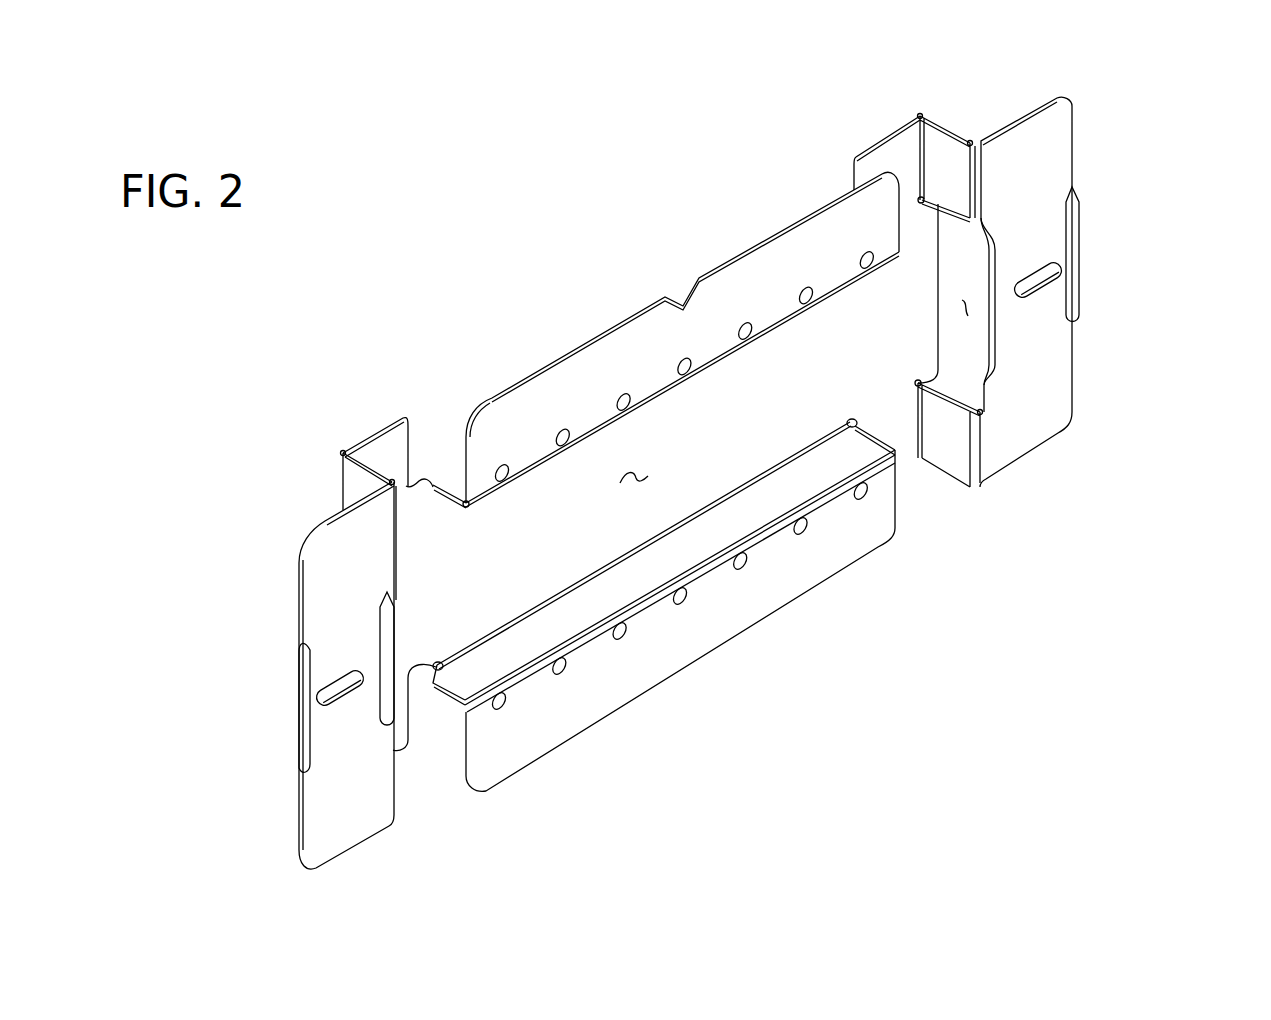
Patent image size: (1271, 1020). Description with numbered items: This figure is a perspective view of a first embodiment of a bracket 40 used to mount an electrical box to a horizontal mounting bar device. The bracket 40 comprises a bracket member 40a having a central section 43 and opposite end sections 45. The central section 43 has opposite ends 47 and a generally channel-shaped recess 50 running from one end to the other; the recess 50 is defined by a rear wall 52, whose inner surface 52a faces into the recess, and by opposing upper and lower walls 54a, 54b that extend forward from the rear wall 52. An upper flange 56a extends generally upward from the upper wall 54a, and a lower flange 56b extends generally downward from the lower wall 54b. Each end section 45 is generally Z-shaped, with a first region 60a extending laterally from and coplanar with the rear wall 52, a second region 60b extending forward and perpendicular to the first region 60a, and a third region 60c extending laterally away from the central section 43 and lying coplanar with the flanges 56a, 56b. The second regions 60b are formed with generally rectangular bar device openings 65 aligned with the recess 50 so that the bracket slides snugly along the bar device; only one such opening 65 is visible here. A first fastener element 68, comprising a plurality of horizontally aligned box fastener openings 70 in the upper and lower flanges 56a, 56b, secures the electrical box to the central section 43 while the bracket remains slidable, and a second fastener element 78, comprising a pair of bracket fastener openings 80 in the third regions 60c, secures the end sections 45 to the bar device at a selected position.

The bracket 40 is at (685, 476).
The bracket member 40a is at (685, 476).
The central section 43 is at (713, 620).
The end sections 45 is at (684, 501).
The opposite ends 47 is at (453, 585).
The channel-shaped recess 50 is at (563, 619).
The rear wall 52 is at (666, 312).
The inner surface 52a is at (765, 380).
The upper wall 54a is at (457, 478).
The lower wall 54b is at (623, 477).
The upper flange 56a is at (647, 330).
The lower flange 56b is at (837, 570).
The first region 60a is at (380, 448).
The second region 60b is at (362, 485).
The third region 60c is at (333, 596).
The bar device opening 65 is at (965, 302).
The first fastener element 68 is at (629, 509).
The box fastener openings 70 is at (620, 400).
The second fastener element 78 is at (685, 505).
The bracket fastener openings 80 is at (1025, 290).